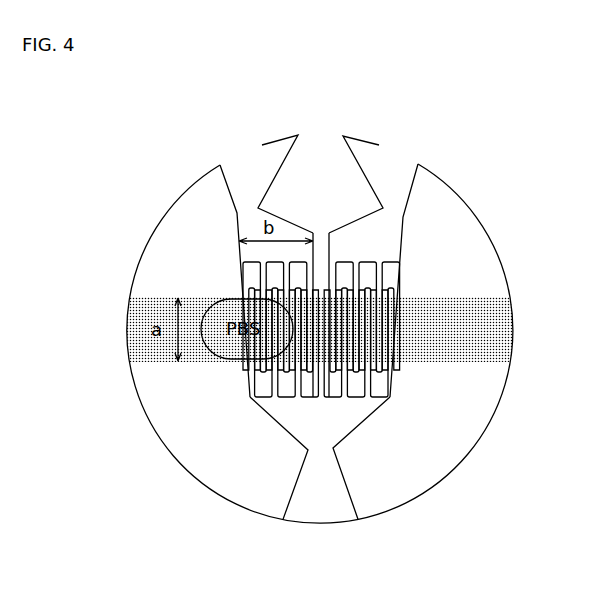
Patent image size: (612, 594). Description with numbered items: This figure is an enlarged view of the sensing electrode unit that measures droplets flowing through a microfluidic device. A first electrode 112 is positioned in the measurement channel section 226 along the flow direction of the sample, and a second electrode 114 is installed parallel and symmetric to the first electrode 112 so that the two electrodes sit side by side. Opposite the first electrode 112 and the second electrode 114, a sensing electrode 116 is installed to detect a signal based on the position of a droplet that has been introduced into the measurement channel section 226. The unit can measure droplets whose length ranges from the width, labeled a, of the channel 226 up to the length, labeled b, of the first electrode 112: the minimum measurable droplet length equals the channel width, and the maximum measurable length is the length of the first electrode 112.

The first electrode 112 is at (247, 170).
The second electrode 114 is at (395, 188).
The sensing electrode 116 is at (320, 480).
The measurement channel section 226 is at (463, 362).